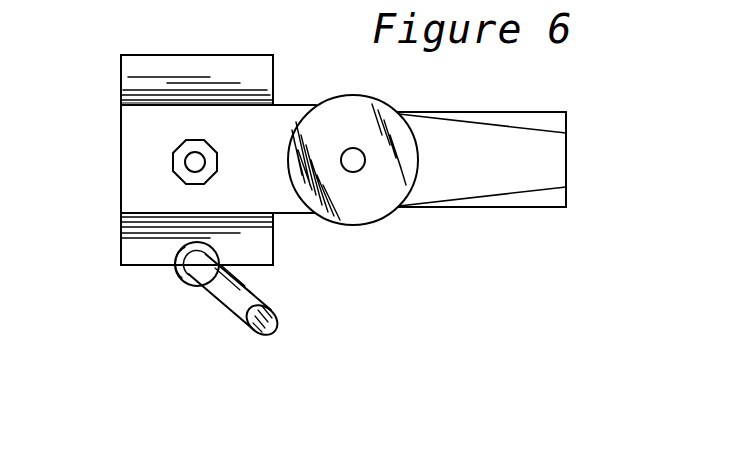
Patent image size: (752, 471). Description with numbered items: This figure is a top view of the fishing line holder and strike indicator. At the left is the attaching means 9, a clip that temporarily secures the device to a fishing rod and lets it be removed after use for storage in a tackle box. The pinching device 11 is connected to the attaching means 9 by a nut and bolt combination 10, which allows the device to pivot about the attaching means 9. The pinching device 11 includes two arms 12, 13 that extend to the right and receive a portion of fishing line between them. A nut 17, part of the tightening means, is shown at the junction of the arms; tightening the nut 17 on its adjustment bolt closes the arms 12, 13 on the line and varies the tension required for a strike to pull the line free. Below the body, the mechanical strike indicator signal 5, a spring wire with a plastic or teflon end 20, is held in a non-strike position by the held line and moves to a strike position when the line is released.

The attaching means 9 is at (200, 62).
The nut and bolt combination 10 is at (172, 162).
The pinching device 11 is at (137, 198).
The mechanical strike indicator signal 5 is at (173, 250).
The plastic or teflon end 20 is at (227, 292).
The nut 17 is at (345, 205).
The arm 12 is at (557, 160).
The arm 13 is at (558, 200).